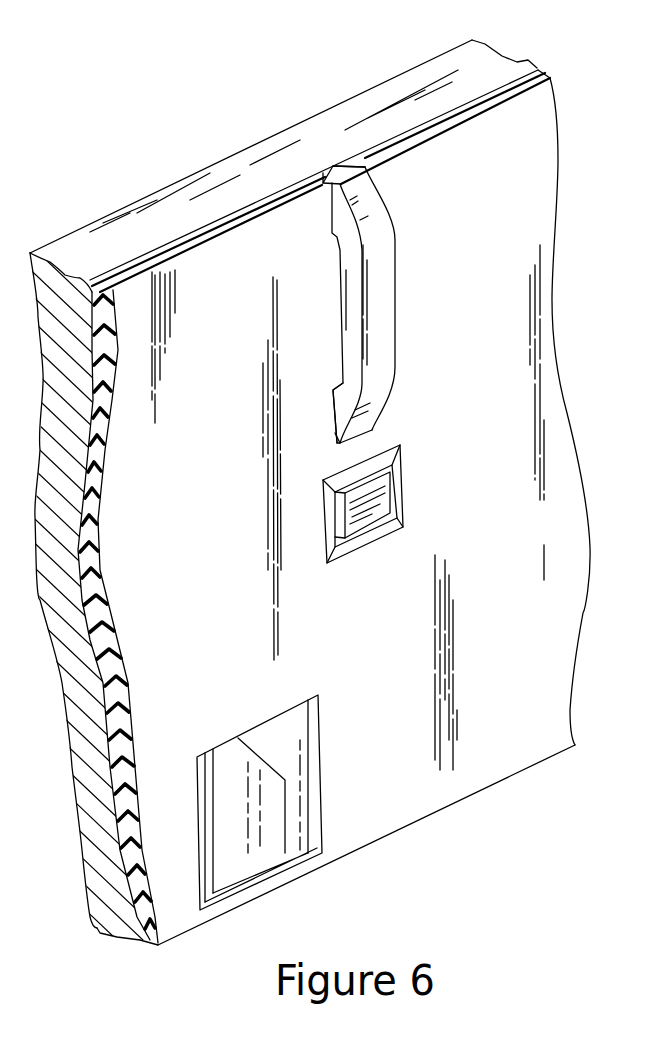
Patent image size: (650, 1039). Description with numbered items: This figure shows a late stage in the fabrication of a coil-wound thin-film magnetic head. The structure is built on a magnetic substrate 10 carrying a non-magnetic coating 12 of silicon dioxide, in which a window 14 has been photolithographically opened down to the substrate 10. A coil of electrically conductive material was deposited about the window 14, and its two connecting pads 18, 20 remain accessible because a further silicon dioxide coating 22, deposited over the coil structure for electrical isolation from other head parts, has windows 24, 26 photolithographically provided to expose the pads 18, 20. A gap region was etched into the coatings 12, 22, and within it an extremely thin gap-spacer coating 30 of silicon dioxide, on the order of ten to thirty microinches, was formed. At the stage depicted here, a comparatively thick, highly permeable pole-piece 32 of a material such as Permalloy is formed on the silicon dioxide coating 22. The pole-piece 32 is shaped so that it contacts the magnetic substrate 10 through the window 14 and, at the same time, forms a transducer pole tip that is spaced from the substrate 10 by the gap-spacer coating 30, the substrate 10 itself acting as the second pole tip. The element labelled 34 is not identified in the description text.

The magnetic substrate 10 is at (408, 72).
The non-magnetic coating 12 is at (535, 62).
The window 14 is at (335, 390).
The connecting pad 18 is at (308, 853).
The connecting pad 20 is at (403, 523).
The silicon dioxide coating 22 is at (552, 73).
The window 24 is at (322, 790).
The window 26 is at (383, 537).
The gap-spacer coating 30 is at (318, 170).
The pole-piece 32 is at (390, 307).
The tab 34 is at (373, 192).